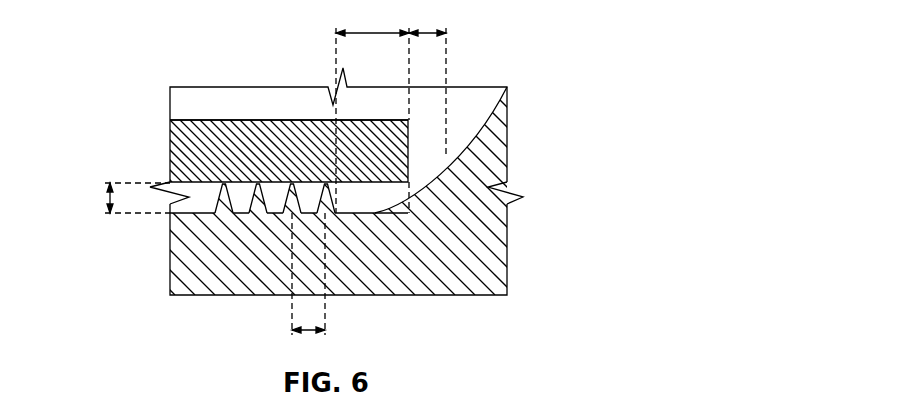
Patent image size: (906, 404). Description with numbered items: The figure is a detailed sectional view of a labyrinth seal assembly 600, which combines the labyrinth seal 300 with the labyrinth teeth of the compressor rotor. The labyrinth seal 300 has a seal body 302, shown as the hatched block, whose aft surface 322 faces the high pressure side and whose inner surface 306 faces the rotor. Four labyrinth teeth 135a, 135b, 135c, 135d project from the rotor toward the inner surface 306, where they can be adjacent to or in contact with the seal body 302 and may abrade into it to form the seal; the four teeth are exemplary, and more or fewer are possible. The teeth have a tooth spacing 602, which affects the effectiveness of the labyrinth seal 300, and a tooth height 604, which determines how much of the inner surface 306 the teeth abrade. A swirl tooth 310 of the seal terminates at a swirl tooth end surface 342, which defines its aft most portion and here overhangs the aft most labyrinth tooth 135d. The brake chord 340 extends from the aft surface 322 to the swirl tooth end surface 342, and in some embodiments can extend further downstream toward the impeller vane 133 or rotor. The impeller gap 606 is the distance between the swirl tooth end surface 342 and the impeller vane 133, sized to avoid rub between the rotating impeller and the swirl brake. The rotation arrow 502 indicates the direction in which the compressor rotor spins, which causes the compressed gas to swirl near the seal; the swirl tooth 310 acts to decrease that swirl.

The labyrinth seal assembly 600 is at (141, 38).
The labyrinth seal 300 is at (183, 120).
The seal body 302 is at (177, 130).
The aft surface 322 is at (336, 120).
The impeller vane 133 is at (490, 156).
The swirl tooth end surface 342 is at (412, 152).
The inner surface 306 is at (200, 192).
The labyrinth tooth 135a is at (226, 196).
The labyrinth tooth 135b is at (256, 196).
The labyrinth tooth 135c is at (290, 198).
The labyrinth tooth 135d is at (327, 198).
The swirl tooth 310 is at (373, 162).
The brake chord 340 is at (376, 32).
The impeller gap 606 is at (422, 32).
The tooth spacing 602 is at (312, 332).
The tooth height 604 is at (108, 199).
The rotation arrow 502 is at (553, 325).